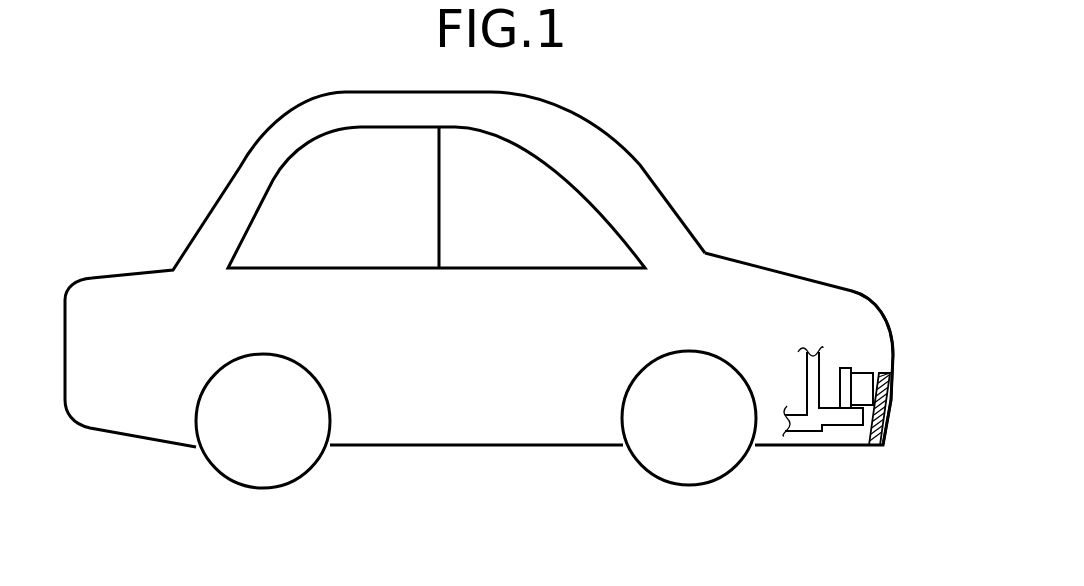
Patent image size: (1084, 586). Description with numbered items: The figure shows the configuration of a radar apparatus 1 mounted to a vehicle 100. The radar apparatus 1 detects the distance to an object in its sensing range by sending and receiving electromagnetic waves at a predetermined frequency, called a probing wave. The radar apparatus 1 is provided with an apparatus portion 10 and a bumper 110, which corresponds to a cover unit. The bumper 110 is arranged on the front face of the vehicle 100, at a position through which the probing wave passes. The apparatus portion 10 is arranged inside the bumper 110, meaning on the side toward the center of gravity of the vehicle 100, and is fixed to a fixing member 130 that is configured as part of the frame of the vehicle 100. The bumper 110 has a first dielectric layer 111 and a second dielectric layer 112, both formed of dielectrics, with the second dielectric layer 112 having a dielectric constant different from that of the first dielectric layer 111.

The vehicle 100 is at (711, 162).
The radar apparatus 1 is at (878, 296).
The apparatus portion 10 is at (873, 368).
The bumper 110 is at (896, 324).
The first dielectric layer 111 is at (897, 372).
The second dielectric layer 112 is at (886, 372).
The fixing member 130 is at (808, 383).